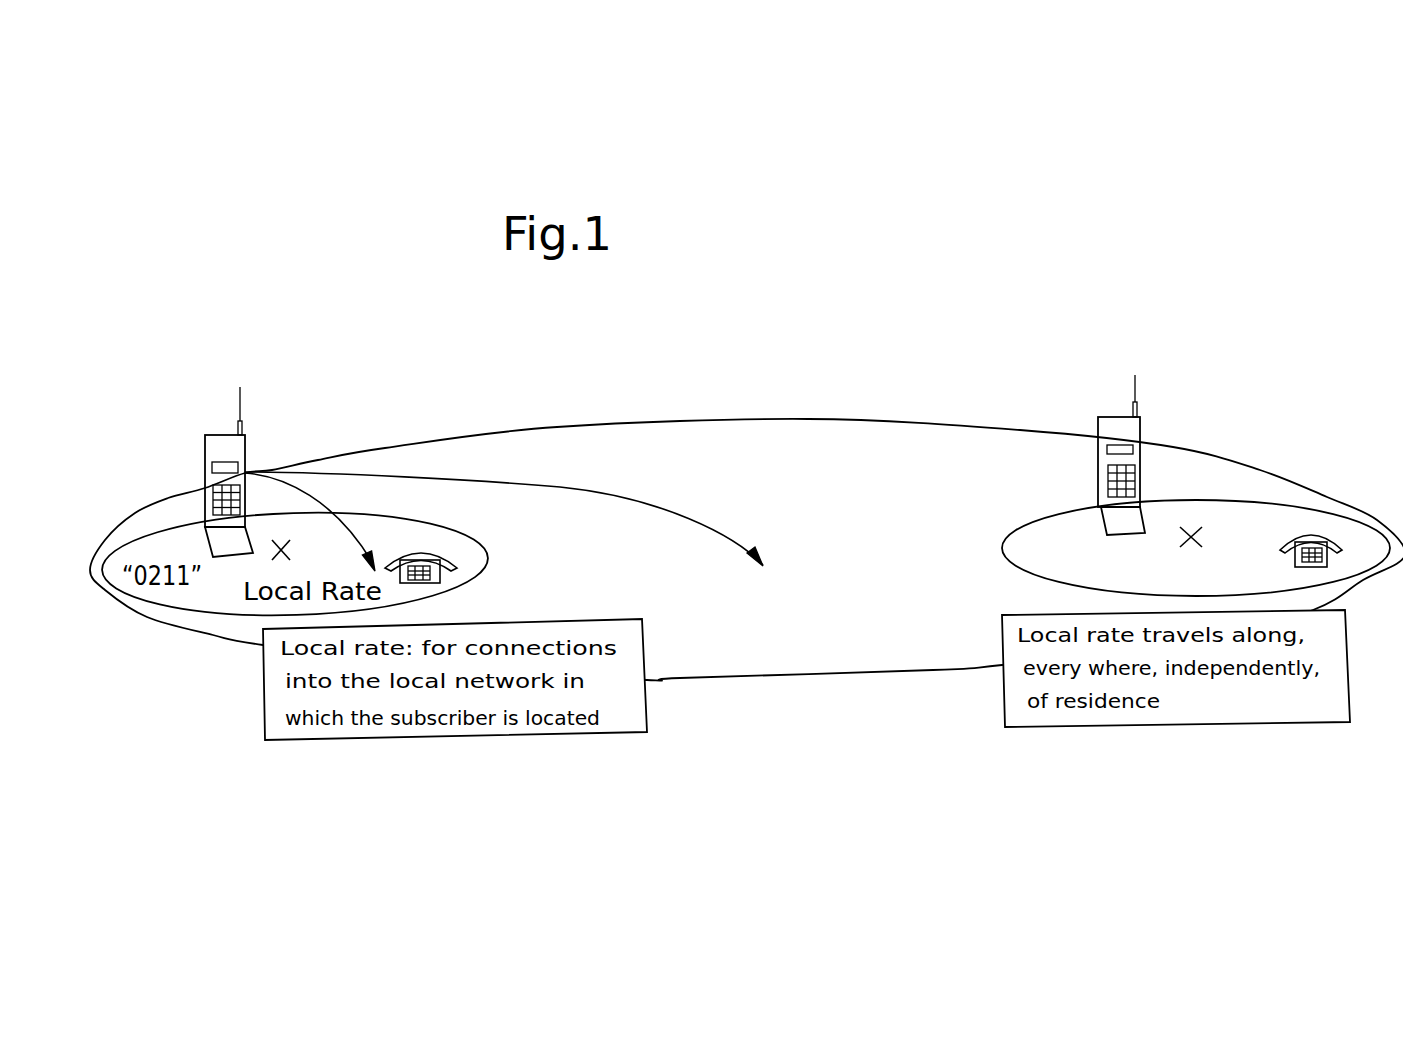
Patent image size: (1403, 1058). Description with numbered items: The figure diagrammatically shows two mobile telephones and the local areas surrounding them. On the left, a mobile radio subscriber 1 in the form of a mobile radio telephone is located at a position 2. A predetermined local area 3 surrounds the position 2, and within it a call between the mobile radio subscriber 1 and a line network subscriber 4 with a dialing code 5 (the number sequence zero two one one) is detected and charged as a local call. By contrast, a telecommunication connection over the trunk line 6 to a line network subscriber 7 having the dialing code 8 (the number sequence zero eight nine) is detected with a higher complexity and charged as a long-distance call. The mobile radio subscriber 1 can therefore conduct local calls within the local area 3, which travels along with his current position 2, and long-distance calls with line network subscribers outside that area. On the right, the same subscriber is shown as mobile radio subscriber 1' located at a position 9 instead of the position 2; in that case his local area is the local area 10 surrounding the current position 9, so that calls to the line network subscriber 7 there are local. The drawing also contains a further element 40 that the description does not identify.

The mobile radio subscriber 1 is at (210, 457).
The mobile radio subscriber 1' is at (1120, 426).
The position 2 is at (278, 538).
The local area 3 is at (363, 495).
The line network subscriber 4 is at (430, 549).
The dialing code 5 is at (400, 486).
The trunk line 6 is at (808, 420).
The line network subscriber 7 is at (1313, 533).
The dialing code 8 is at (1192, 407).
The position 9 is at (1190, 533).
The local area 10 is at (1011, 536).
The local rate call connection 40 is at (315, 490).